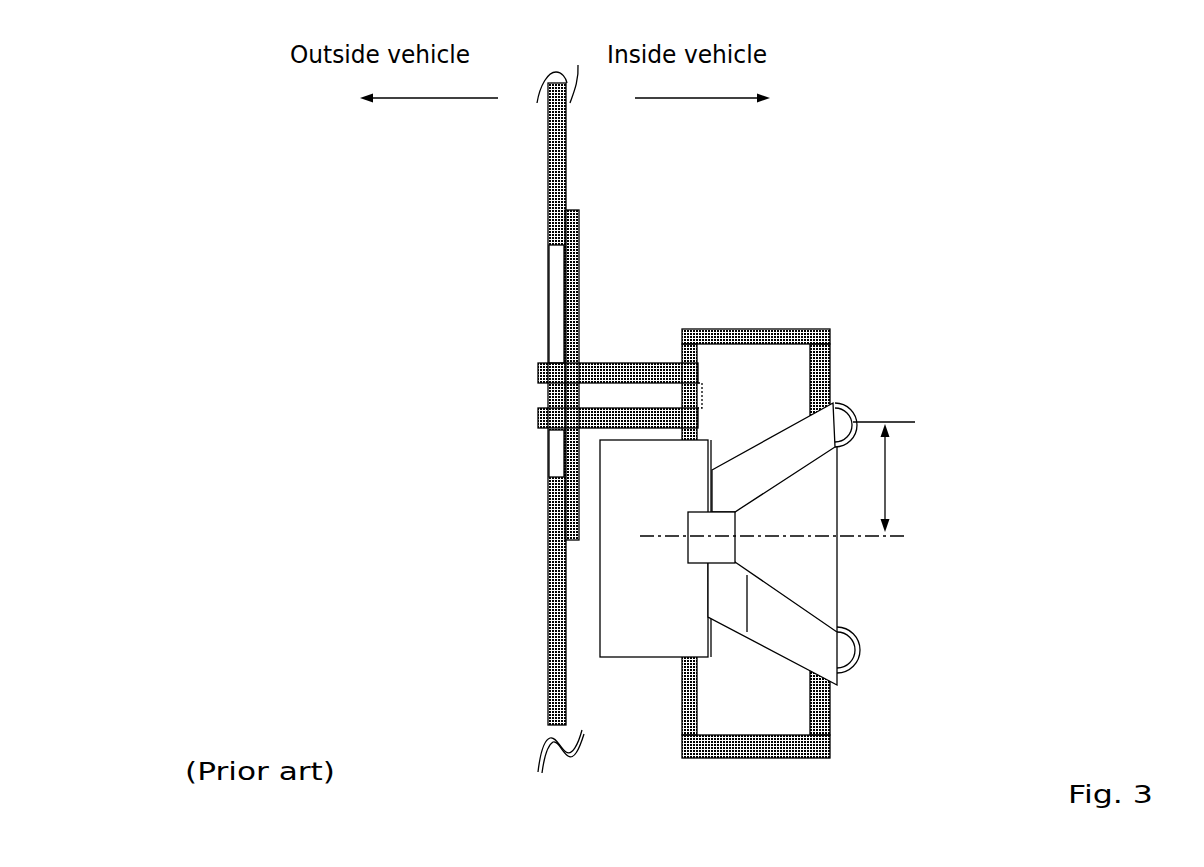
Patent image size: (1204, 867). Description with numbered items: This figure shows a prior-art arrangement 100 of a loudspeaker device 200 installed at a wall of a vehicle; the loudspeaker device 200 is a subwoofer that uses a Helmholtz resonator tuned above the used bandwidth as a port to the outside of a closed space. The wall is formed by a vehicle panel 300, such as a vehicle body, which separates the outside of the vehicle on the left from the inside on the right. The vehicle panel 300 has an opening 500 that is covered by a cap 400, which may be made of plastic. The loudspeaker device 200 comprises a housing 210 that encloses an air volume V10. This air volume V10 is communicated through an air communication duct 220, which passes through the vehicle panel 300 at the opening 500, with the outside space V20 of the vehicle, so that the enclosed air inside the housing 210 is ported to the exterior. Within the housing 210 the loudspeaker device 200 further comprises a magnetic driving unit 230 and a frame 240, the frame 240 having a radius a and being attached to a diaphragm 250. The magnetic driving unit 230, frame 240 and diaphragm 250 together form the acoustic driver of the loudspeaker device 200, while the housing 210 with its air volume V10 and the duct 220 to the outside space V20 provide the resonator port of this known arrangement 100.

The known arrangement 100 is at (825, 516).
The loudspeaker device 200 is at (869, 616).
The housing 210 is at (830, 372).
The air communication duct 220 is at (553, 430).
The magnetic driving unit 230 is at (642, 658).
The frame 240 is at (783, 657).
The diaphragm 250 is at (837, 605).
The vehicle panel 300 is at (547, 158).
The cap 400 is at (580, 260).
The opening 500 is at (503, 283).
The air volume V10 is at (732, 362).
The outside space V20 is at (485, 372).
The radius a is at (781, 479).